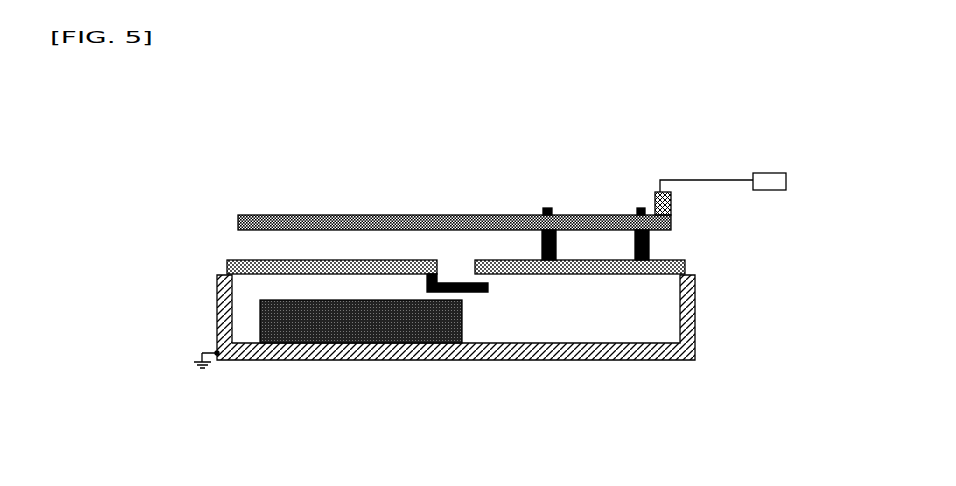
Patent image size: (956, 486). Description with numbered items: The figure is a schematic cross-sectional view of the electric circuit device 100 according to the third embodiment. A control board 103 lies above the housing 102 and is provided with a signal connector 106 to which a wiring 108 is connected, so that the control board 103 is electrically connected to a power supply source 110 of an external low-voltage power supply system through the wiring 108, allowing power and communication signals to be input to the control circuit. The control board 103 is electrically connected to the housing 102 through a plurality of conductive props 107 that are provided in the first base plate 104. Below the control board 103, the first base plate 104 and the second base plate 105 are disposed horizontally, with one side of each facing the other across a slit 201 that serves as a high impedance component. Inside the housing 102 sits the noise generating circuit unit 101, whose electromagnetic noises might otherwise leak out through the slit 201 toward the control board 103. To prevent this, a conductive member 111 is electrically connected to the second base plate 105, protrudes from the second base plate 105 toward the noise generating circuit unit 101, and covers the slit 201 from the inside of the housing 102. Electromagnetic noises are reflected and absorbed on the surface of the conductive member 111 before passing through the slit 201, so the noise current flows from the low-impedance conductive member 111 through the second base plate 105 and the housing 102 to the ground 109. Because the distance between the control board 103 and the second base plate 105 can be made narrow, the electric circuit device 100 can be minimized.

The electric circuit device 100 is at (182, 132).
The noise generating circuit unit 101 is at (385, 343).
The housing 102 is at (547, 393).
The control board 103 is at (305, 214).
The first base plate 104 is at (680, 260).
The second base plate 105 is at (233, 260).
The signal connector 106 is at (652, 192).
The conductive props 107 is at (546, 208).
The wiring 108 is at (693, 180).
The ground 109 is at (202, 353).
The power supply source 110 is at (770, 180).
The conductive member 111 is at (490, 288).
The slit 201 is at (455, 270).